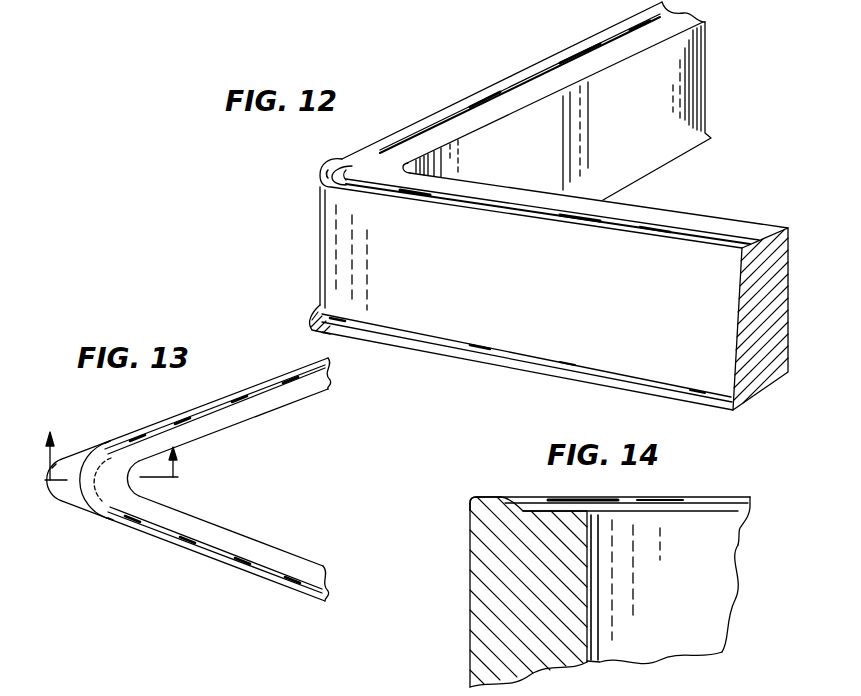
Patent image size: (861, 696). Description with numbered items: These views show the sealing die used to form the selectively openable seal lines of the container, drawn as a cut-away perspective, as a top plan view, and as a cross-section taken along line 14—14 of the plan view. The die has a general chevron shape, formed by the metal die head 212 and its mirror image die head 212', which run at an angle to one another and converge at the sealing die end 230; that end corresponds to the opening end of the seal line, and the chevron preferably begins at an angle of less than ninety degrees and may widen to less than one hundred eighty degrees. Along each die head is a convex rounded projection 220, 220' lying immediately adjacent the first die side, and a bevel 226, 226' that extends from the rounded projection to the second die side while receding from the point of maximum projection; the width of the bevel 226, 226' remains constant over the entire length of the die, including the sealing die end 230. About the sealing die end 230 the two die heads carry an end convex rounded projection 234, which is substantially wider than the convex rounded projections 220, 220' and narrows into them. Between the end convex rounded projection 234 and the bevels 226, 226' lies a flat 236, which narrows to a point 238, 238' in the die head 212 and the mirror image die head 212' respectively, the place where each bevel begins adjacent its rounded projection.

In FIG. 12, the metal die head 212 is at (527, 362).
In FIG. 12, the mirror image die head 212' is at (587, 108).
In FIG. 14, the mirror image die head 212' is at (681, 587).
In FIG. 12, the convex rounded projection 220 is at (552, 229).
In FIG. 13, the convex rounded projection 220 is at (215, 559).
In FIG. 12, the convex rounded projection 220' is at (520, 83).
In FIG. 13, the convex rounded projection 220' is at (215, 409).
In FIG. 14, the convex rounded projection 220' is at (625, 490).
In FIG. 12, the bevel 226 is at (554, 284).
In FIG. 13, the bevel 226 is at (195, 548).
In FIG. 12, the bevel 226' is at (551, 101).
In FIG. 13, the bevel 226' is at (198, 409).
In FIG. 14, the bevel 226' is at (689, 580).
In FIG. 12, the sealing die end 230 is at (318, 260).
In FIG. 13, the sealing die end 230 is at (48, 496).
In FIG. 12, the end convex rounded projection 234 is at (318, 172).
In FIG. 13, the end convex rounded projection 234 is at (53, 512).
In FIG. 14, the end convex rounded projection 234 is at (492, 500).
In FIG. 13, the flat 236 is at (84, 507).
In FIG. 14, the flat 236 is at (470, 528).
In FIG. 13, the point 238 is at (147, 547).
In FIG. 13, the point 238' is at (133, 425).
In FIG. 13, the section line 14— 14 is at (127, 448).